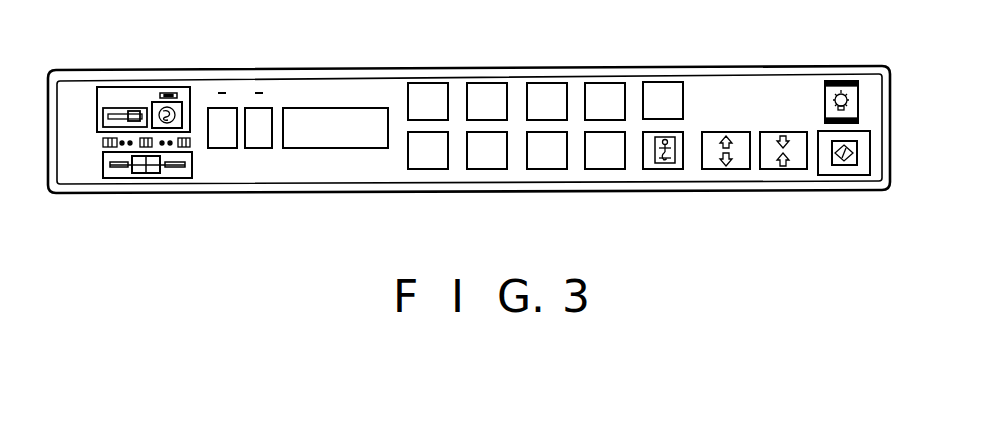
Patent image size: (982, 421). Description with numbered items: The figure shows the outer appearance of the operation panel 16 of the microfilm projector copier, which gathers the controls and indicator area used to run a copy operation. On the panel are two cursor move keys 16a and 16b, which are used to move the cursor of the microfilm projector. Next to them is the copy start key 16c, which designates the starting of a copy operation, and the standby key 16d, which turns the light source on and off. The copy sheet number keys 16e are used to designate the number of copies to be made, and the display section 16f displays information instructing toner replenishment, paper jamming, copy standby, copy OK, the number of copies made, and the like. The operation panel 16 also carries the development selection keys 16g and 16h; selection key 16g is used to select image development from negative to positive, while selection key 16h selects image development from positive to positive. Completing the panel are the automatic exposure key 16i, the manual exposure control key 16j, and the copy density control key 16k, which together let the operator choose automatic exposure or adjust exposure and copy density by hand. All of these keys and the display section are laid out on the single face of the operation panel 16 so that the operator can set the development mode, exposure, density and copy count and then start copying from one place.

The operation panel 16 is at (762, 66).
The cursor move key 16a is at (710, 169).
The cursor move key 16b is at (770, 169).
The copy start key 16c is at (843, 175).
The standby key 16d is at (843, 82).
The copy sheet number keys 16e is at (557, 81).
The display section 16f is at (337, 117).
The N→P development selection key 16g is at (229, 147).
The P→P development selection key 16h is at (263, 147).
The automatic exposure key 16i is at (178, 110).
The manual exposure control key 16j is at (145, 98).
The copy density control key 16k is at (149, 173).